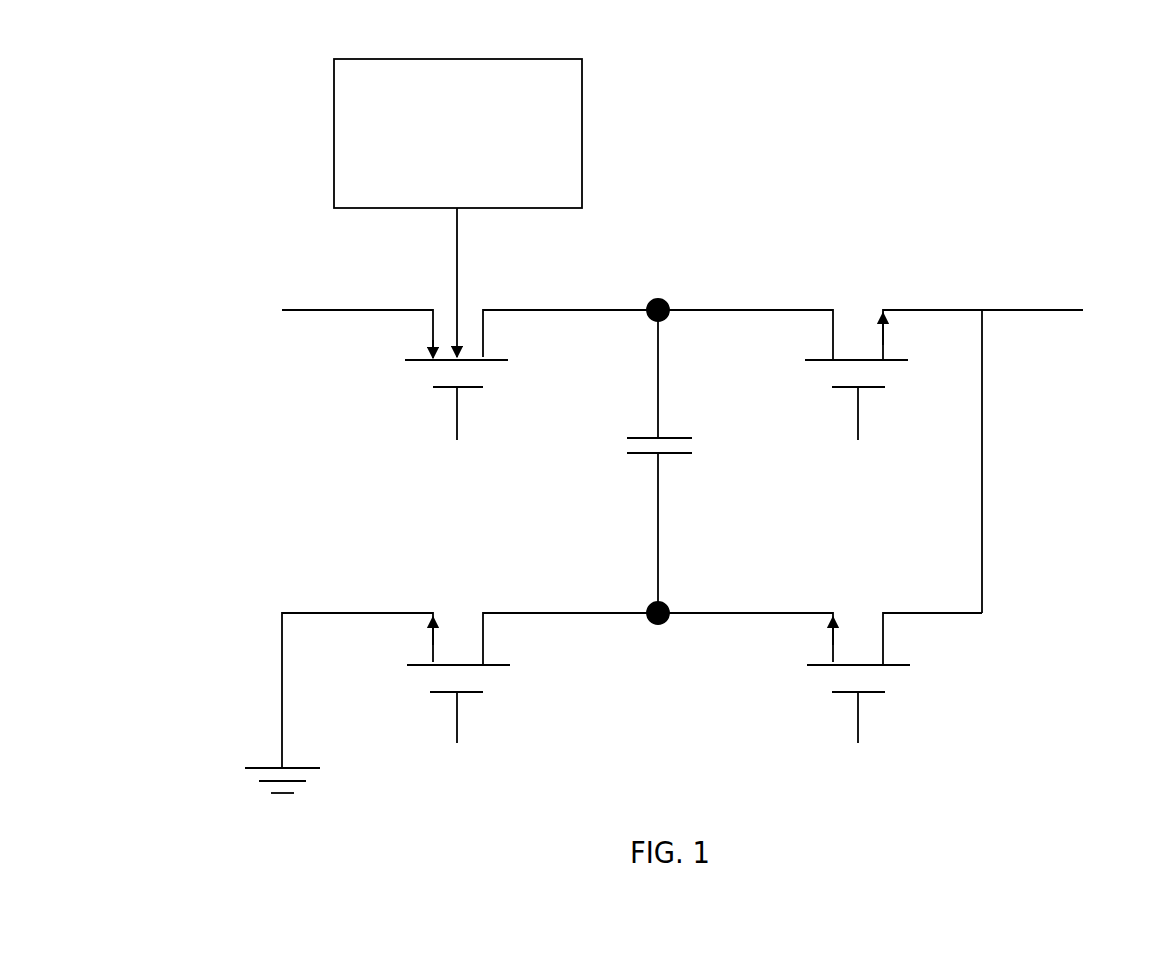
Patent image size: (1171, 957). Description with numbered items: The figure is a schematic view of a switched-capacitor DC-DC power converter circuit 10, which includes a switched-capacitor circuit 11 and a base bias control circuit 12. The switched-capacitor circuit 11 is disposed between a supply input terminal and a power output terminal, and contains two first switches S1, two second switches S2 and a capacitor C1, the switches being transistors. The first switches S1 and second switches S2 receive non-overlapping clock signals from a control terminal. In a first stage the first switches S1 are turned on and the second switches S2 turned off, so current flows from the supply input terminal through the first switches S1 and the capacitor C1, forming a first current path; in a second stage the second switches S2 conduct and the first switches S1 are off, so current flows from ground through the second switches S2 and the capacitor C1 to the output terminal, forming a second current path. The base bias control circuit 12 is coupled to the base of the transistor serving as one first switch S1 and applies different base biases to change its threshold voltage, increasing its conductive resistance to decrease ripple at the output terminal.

The switched-capacitor DC-DC power converter circuit 10 is at (252, 90).
The switched-capacitor circuit 11 is at (283, 452).
The base bias control circuit 12 is at (474, 193).
The first switch S1 is at (676, 551).
The second switch S2 is at (678, 551).
The capacitor C1 is at (682, 461).